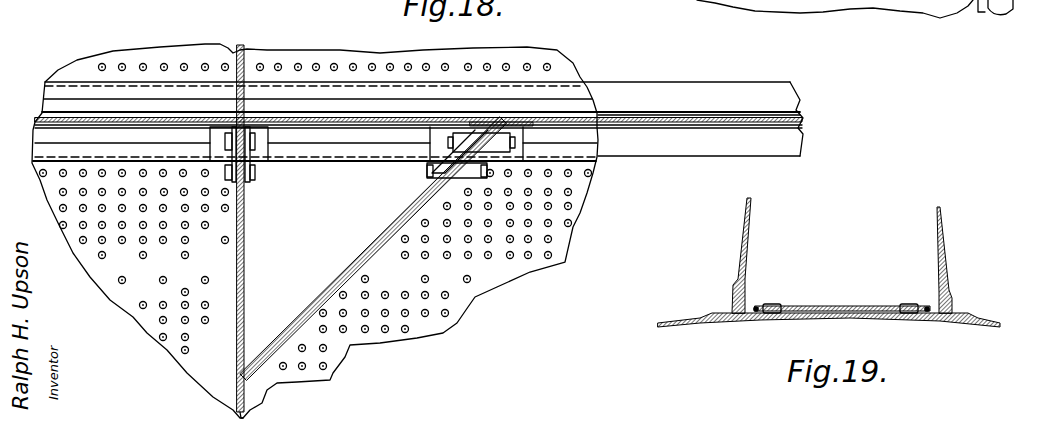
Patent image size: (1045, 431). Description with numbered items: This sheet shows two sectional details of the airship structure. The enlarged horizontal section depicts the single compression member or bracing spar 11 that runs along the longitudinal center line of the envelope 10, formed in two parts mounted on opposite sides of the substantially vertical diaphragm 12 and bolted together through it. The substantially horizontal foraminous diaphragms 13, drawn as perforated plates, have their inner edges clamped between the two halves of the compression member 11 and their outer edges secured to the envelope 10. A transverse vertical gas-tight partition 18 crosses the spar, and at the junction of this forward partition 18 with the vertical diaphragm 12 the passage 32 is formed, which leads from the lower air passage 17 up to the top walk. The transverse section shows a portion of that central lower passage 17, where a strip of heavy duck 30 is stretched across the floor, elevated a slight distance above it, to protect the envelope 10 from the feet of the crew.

In FIG. 19, the envelope 10 is at (682, 322).
In FIG. 18, the compression member 11 is at (682, 82).
In FIG. 18, the vertical diaphragm 12 is at (802, 112).
In FIG. 18, the foraminous diaphragm 13 is at (353, 50).
In FIG. 19, the lower passage 17 is at (842, 255).
In FIG. 18, the transverse vertical gas tight partition 18 is at (241, 50).
In FIG. 19, the strip of heavy duck 30 is at (830, 306).
In FIG. 18, the passage 32 is at (386, 248).